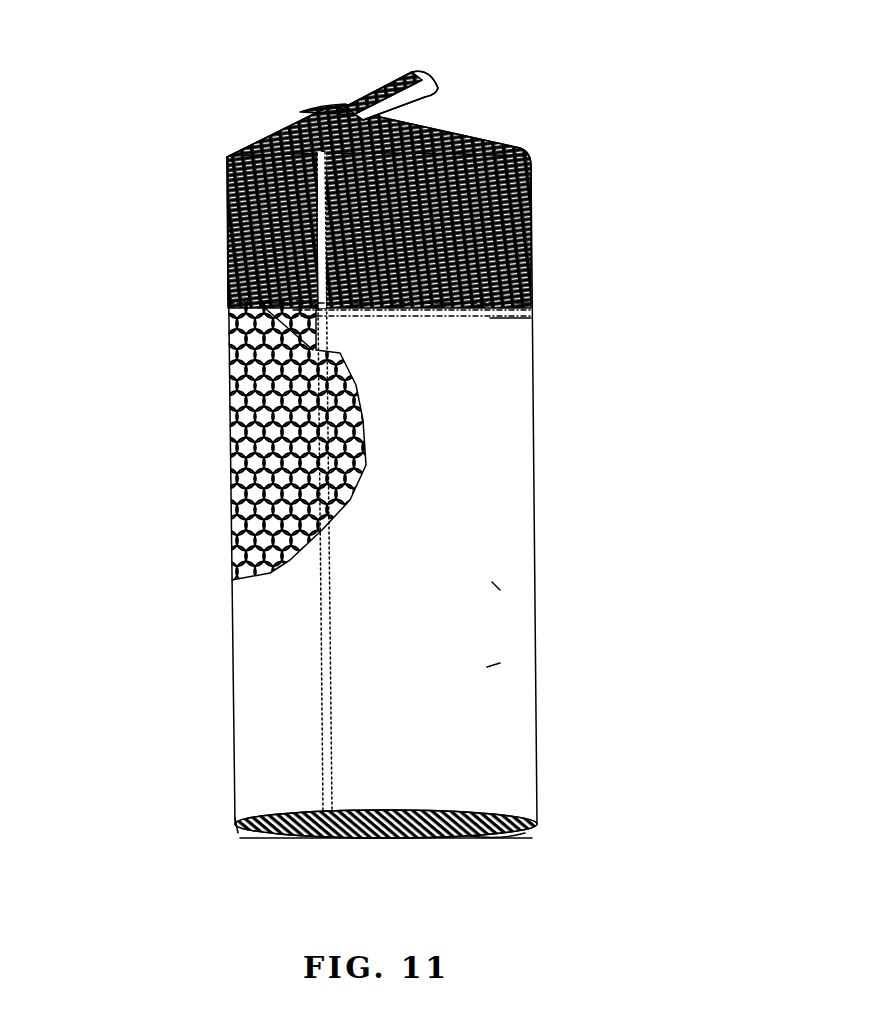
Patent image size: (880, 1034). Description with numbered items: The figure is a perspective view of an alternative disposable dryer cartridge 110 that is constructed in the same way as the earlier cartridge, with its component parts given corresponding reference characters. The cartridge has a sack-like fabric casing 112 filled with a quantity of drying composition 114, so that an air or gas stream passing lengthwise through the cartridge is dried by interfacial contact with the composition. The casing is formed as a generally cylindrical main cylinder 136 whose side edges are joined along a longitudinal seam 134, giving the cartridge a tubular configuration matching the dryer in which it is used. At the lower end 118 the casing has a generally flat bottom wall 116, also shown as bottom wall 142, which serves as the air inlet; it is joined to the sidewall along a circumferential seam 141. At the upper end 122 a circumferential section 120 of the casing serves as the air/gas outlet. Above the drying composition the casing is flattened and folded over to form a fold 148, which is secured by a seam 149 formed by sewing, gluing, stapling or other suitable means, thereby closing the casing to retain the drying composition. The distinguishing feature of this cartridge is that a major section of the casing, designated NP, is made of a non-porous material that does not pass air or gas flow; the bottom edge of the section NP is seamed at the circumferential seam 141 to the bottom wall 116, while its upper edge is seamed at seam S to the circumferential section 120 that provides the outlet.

The dryer cartridge 110 is at (105, 101).
The casing 112 is at (532, 418).
The drying composition 114 is at (232, 530).
The bottom wall 116 is at (527, 877).
The lower end 118 is at (537, 822).
The circumferential section 120 is at (552, 165).
The upper end 122 is at (227, 152).
The longitudinal seam 134 is at (325, 803).
The main cylinder 136 is at (487, 667).
The circumferential seam 141 is at (237, 823).
The bottom wall 142 is at (500, 840).
The fold 148 is at (317, 112).
The seam 149 is at (397, 92).
The seam S is at (492, 318).
The non-porous section NP is at (492, 582).